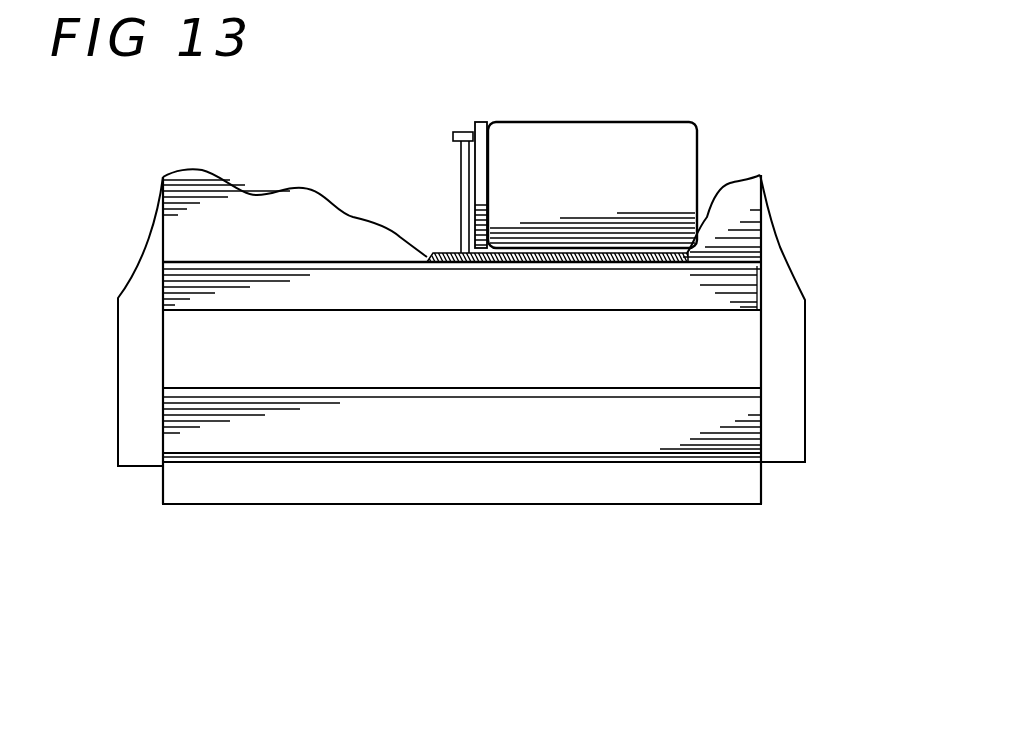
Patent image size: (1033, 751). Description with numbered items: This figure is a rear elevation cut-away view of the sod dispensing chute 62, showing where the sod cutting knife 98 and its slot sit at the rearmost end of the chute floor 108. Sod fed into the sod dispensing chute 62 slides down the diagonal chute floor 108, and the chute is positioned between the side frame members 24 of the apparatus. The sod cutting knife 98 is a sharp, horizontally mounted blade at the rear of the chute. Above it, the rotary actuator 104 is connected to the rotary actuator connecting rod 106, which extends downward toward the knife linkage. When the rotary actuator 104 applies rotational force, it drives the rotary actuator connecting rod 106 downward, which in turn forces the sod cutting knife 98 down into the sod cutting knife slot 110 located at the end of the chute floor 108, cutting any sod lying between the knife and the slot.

The side frame member 24 is at (138, 473).
The sod dispensing chute 62 is at (250, 347).
The sod cutting knife 98 is at (522, 290).
The rotary actuator 104 is at (590, 120).
The rotary actuator connecting rod 106 is at (453, 125).
The chute floor 108 is at (347, 510).
The sod cutting knife slot 110 is at (450, 464).